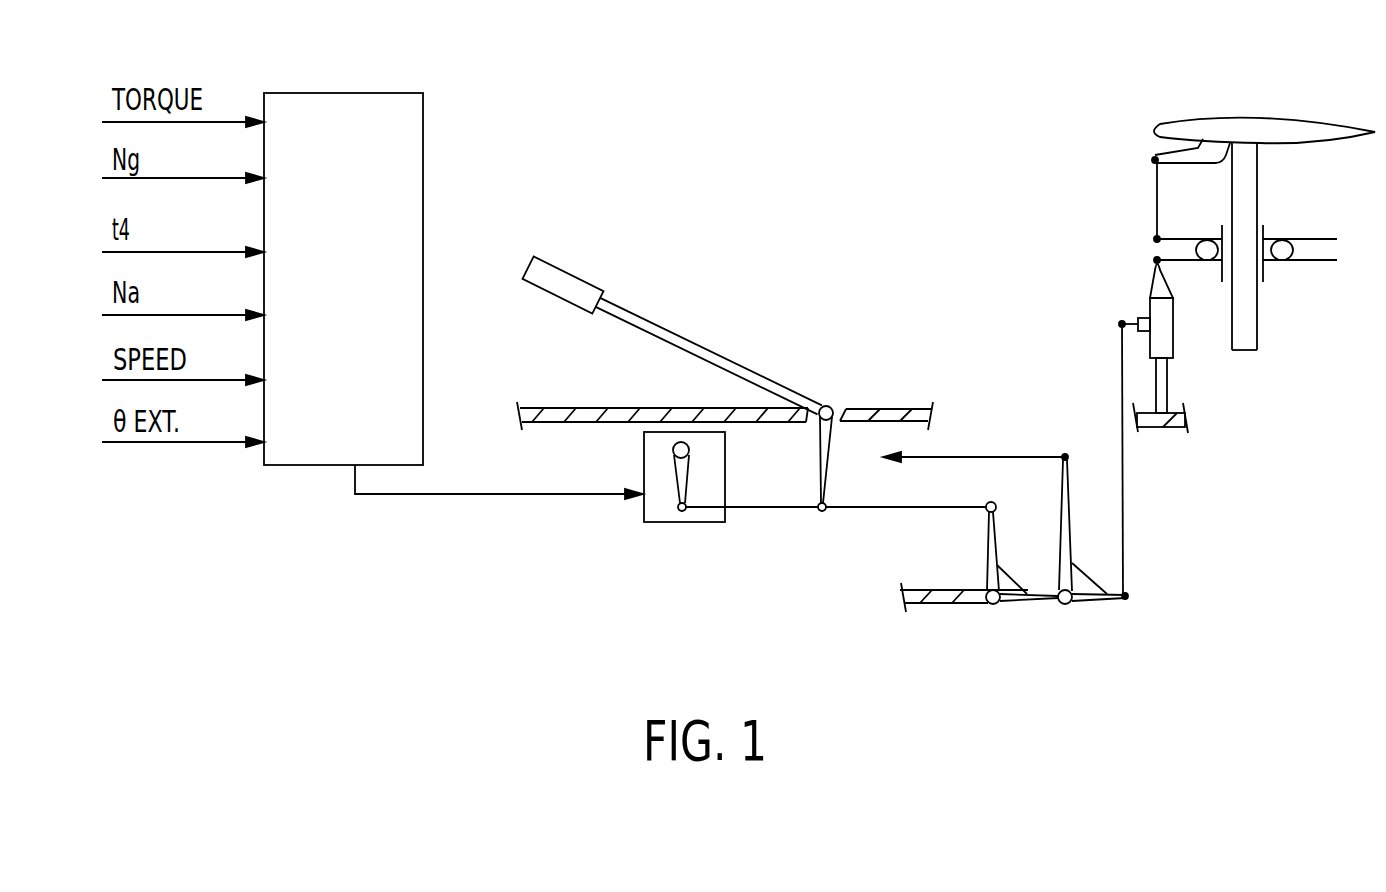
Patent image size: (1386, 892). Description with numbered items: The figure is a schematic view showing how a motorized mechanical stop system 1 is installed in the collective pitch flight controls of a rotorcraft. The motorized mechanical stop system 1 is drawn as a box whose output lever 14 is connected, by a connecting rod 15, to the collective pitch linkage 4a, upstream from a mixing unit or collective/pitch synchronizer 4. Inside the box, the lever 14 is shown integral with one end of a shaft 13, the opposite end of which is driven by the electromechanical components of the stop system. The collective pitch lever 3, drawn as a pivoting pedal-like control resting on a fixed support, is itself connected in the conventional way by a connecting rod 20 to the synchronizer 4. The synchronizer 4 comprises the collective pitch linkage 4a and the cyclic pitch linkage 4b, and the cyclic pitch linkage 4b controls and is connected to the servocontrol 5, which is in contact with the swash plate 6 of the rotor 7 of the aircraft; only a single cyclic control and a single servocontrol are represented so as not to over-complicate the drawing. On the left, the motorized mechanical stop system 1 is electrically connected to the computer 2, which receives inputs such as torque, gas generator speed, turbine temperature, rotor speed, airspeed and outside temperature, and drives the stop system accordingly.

The motorized mechanical stop system 1 is at (620, 514).
The computer 2 is at (405, 93).
The collective pitch lever 3 is at (643, 317).
The collective/pitch synchronizer 4 is at (1035, 528).
The collective pitch linkage 4a is at (995, 568).
The cyclic pitch linkage 4b is at (1065, 557).
The servocontrol 5 is at (1198, 352).
The swash plate 6 is at (1136, 257).
The rotor 7 is at (1179, 96).
The shaft 13 is at (680, 443).
The output lever 14 is at (677, 493).
The connecting rod 15 is at (770, 508).
The connecting rod 20 is at (883, 508).